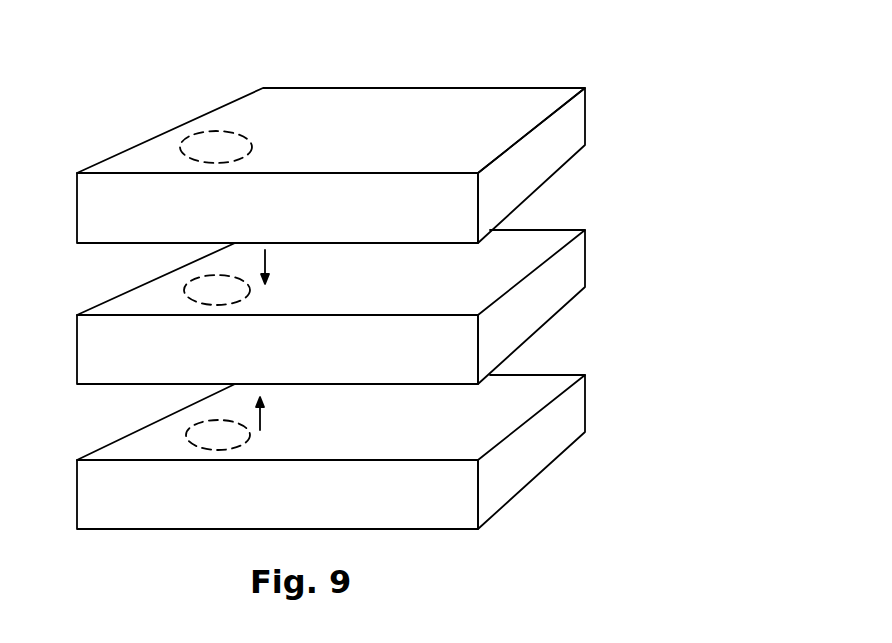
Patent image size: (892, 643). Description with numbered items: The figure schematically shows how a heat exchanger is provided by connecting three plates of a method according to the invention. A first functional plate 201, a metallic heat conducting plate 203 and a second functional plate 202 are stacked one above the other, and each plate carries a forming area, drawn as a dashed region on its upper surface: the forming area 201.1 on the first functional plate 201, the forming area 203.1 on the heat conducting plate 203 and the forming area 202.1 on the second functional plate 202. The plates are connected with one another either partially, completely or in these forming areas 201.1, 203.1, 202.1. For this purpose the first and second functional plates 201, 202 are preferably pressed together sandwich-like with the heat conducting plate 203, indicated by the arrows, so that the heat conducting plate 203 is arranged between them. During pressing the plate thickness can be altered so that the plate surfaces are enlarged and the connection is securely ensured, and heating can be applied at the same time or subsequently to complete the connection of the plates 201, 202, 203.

The first functional plate 201 is at (547, 153).
The forming area of the first functional plate 201.1 is at (190, 140).
The metallic heat conducting plate 203 is at (570, 282).
The forming area of the heat conducting plate 203.1 is at (200, 303).
The second functional plate 202 is at (572, 423).
The forming area of the second functional plate 202.1 is at (182, 435).